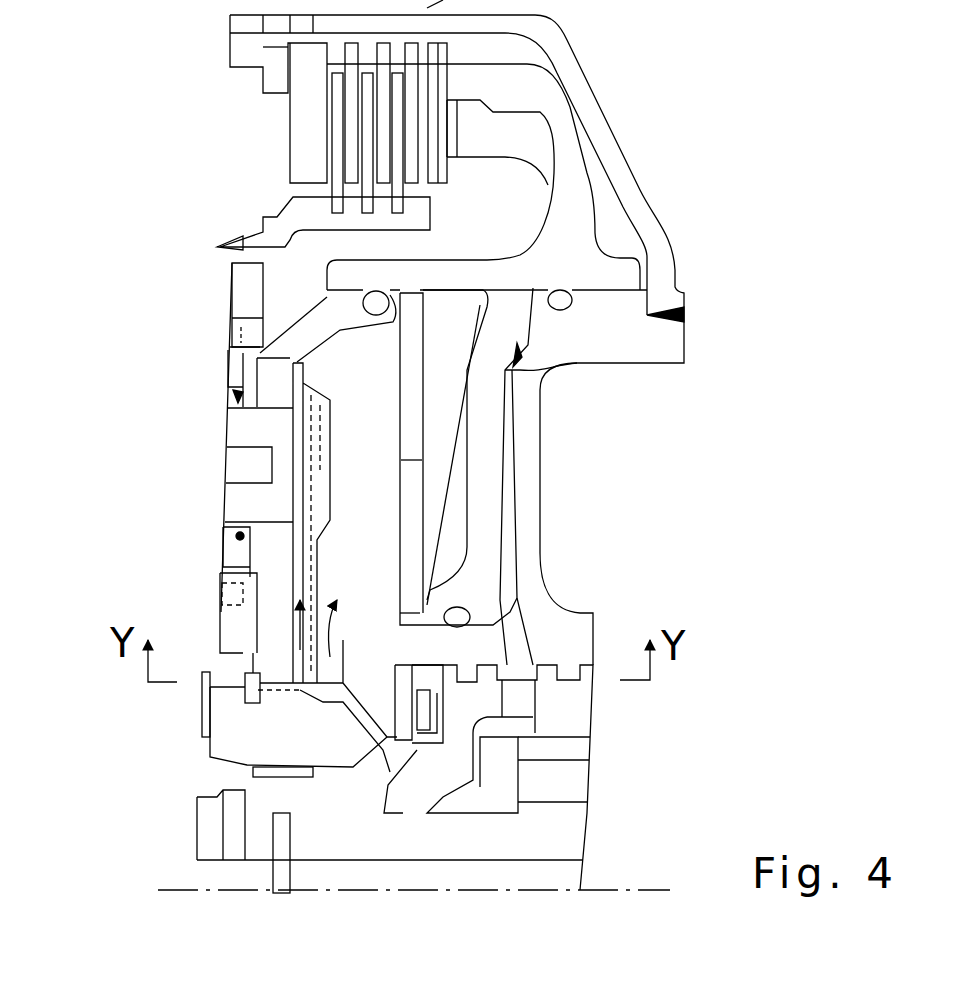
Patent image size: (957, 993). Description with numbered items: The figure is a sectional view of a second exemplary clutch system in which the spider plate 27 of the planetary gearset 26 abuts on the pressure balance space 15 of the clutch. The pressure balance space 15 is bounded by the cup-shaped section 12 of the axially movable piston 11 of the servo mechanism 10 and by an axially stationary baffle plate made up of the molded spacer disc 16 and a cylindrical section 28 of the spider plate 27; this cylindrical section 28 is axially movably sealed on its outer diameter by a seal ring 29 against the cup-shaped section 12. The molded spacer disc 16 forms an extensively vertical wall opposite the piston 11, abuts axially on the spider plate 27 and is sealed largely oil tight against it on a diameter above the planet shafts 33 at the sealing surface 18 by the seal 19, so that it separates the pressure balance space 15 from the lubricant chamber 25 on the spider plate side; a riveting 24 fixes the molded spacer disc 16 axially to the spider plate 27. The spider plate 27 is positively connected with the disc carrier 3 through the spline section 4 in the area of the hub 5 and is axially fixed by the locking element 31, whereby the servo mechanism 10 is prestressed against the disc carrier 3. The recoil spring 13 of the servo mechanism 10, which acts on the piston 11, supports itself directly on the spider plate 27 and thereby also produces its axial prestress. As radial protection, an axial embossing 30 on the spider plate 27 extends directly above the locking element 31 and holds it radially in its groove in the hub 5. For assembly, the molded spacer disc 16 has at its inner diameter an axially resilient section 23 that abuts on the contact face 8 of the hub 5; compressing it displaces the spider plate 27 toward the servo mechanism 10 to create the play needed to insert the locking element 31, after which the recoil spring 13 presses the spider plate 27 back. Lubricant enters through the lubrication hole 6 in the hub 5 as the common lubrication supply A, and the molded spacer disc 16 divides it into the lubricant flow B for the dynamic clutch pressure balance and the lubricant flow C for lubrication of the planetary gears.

The disc carrier 3 is at (667, 272).
The spline section 4 is at (293, 735).
The hub 5 is at (289, 778).
The lubrication hole 6 is at (350, 740).
The contact face 8 is at (232, 681).
The servo mechanism 10 is at (589, 160).
The piston 11 is at (557, 250).
The cup-shaped section 12 is at (442, 257).
The recoil spring 13 is at (410, 413).
The pressure balance space 15 is at (373, 463).
The molded spacer disc 16 is at (325, 498).
The sealing surface 18 is at (292, 360).
The seal 19 is at (277, 370).
The resilient section 23 is at (343, 660).
The riveting 24 is at (296, 446).
The lubricant chamber 25 is at (297, 510).
The planetary gearset 26 is at (212, 553).
The spider plate 27 is at (277, 555).
The cylindrical section 28 is at (282, 330).
The seal ring 29 is at (340, 305).
The embossing 30 is at (243, 667).
The locking element 31 is at (277, 702).
The planet shafts 33 is at (236, 392).
The common lubrication supply A is at (365, 723).
The lubricant flow for the dynamic clutch pressure balance B is at (345, 617).
The lubricant flow for lubrication of the planetary gears C is at (243, 655).